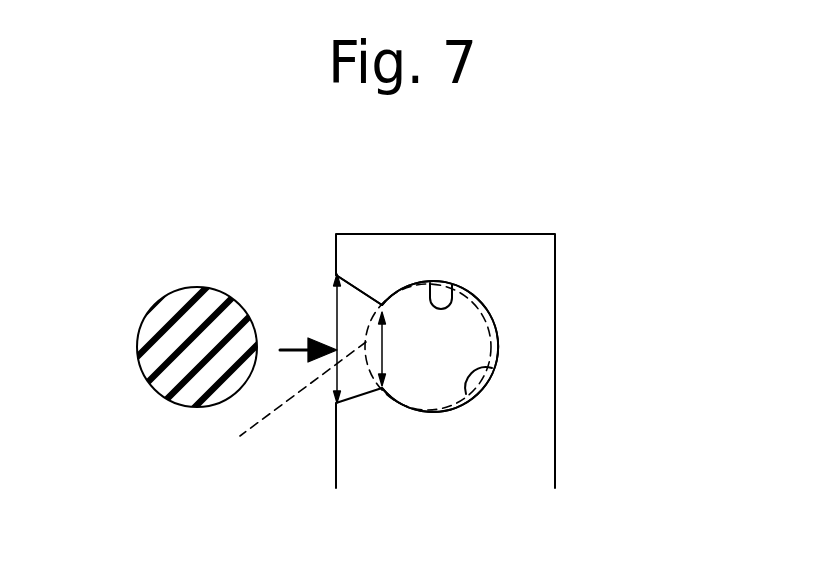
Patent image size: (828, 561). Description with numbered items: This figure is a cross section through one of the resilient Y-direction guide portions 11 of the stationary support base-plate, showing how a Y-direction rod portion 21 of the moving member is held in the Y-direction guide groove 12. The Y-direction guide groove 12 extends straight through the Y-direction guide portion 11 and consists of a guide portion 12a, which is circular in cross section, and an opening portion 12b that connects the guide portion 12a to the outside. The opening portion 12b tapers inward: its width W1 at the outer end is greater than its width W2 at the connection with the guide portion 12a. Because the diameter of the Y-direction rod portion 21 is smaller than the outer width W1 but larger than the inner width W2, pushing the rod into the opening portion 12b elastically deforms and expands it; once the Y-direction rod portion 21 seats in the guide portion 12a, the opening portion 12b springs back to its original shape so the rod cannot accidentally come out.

The Y-direction guide portion 11 is at (535, 246).
The Y-direction guide groove 12 is at (495, 366).
The guide portion 12a is at (430, 284).
The opening portion 12b is at (357, 288).
The Y-direction rod portion 21 is at (220, 377).
The width of the opening portion at the outer end W1 is at (337, 318).
The width of the opening portion at the connection with the guide portion W2 is at (385, 348).